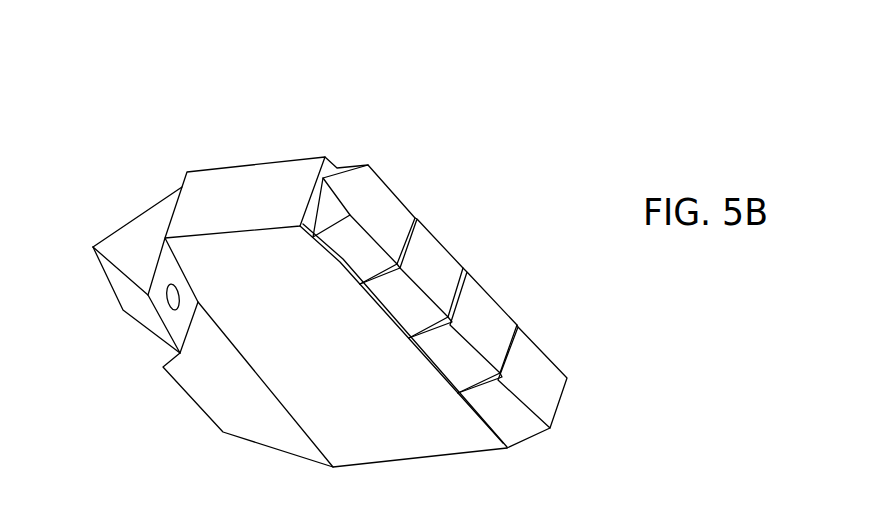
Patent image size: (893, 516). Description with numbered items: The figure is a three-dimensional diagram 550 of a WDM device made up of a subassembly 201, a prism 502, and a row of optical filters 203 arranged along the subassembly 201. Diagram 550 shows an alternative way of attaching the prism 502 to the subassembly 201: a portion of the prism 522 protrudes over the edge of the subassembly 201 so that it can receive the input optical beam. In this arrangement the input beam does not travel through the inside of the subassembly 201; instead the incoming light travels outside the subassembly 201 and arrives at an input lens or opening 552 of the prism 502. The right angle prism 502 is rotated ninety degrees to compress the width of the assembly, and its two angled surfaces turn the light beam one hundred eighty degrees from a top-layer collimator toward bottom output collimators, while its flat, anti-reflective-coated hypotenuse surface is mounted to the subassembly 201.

The 3D diagram 550 is at (535, 80).
The subassembly 201 is at (349, 374).
The optical filters 203 is at (440, 306).
The prism 502 is at (133, 213).
The portion of prism 522 is at (157, 306).
The input lens or opening 552 is at (177, 284).